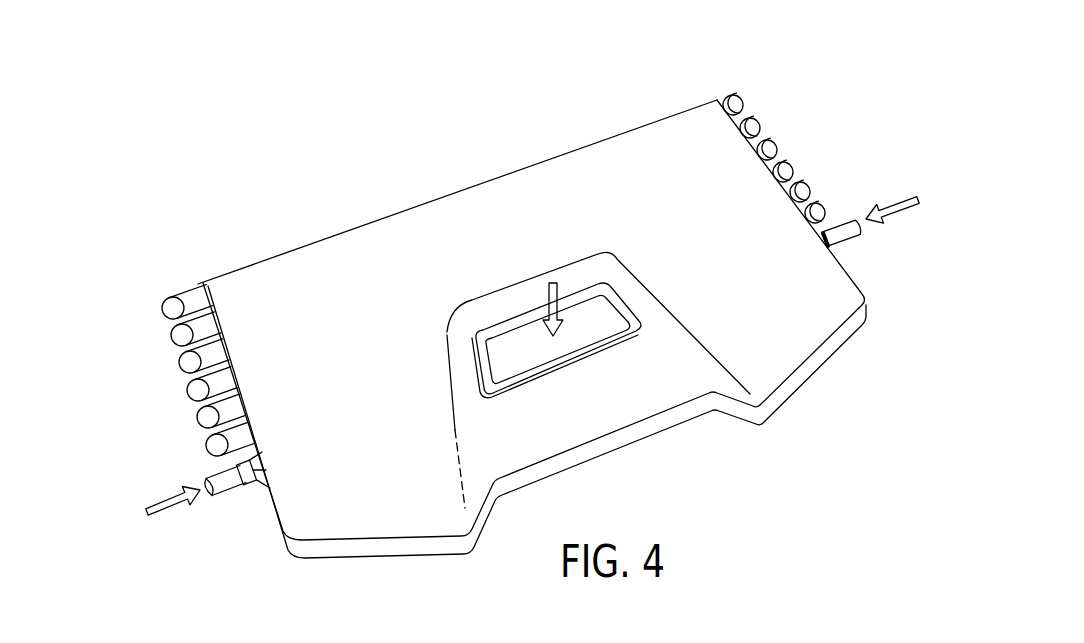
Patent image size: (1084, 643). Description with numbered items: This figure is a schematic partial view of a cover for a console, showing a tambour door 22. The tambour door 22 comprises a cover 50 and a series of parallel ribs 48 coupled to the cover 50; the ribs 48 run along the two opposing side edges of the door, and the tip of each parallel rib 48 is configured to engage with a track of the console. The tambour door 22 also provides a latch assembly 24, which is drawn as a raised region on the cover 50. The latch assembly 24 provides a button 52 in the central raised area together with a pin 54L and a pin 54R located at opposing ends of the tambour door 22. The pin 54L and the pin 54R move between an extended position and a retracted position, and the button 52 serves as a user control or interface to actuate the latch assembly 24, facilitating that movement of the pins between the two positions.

The tambour door 22 is at (444, 248).
The latch assembly 24 is at (626, 393).
The parallel ribs 48 is at (188, 392).
The cover 50 is at (343, 246).
The button 52 is at (556, 342).
The pin 54L is at (227, 486).
The pin 54R is at (841, 232).